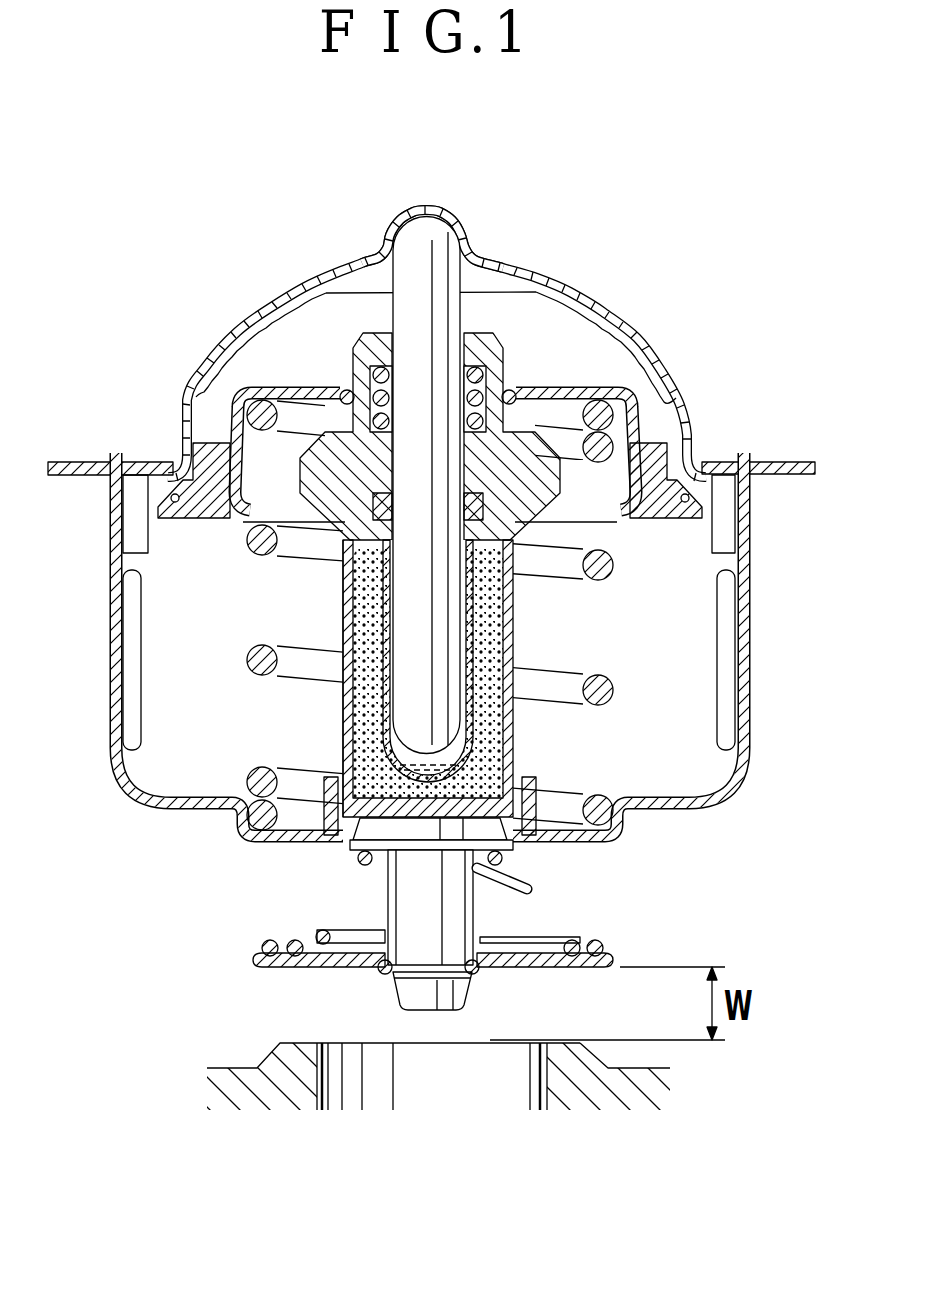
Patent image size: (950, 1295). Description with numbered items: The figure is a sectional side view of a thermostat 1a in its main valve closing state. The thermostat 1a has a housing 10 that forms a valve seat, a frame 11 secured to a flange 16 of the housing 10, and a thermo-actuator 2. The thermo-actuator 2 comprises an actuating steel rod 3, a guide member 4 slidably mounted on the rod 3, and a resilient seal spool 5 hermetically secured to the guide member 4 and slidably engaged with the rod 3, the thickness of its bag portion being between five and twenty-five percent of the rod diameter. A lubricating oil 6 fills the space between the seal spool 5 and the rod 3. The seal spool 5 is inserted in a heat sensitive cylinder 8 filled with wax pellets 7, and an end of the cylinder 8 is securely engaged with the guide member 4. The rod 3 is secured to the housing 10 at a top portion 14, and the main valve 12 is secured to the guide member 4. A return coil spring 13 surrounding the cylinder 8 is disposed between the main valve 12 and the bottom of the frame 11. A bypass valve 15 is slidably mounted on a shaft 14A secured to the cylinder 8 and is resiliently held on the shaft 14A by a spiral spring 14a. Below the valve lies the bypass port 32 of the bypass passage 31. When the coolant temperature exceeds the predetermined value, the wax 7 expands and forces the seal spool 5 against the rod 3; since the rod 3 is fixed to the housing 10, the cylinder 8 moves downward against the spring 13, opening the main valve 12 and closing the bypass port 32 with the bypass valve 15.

The thermostat 1a is at (670, 334).
The thermo-actuator 2 is at (334, 583).
The actuating steel rod 3 is at (442, 228).
The guide member 4 is at (337, 467).
The resilient seal spool 5 is at (348, 697).
The lubricating oil 6 is at (390, 755).
The wax pellets 7 is at (490, 740).
The heat sensitive cylinder 8 is at (517, 620).
The housing 10 is at (290, 290).
The frame 11 is at (110, 677).
The main valve 12 is at (187, 522).
The return coil spring 13 is at (250, 660).
The top portion 14 is at (408, 212).
The shaft 14A is at (410, 902).
The spiral spring 14a is at (535, 886).
The bypass valve 15 is at (612, 955).
The flange 16 is at (791, 461).
The bypass passage 31 is at (408, 1102).
The bypass port 32 is at (505, 1043).